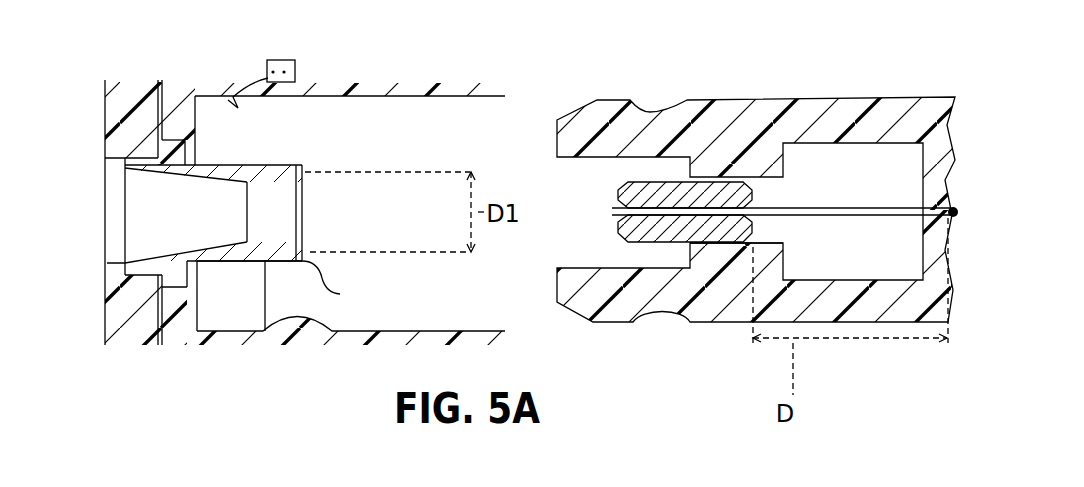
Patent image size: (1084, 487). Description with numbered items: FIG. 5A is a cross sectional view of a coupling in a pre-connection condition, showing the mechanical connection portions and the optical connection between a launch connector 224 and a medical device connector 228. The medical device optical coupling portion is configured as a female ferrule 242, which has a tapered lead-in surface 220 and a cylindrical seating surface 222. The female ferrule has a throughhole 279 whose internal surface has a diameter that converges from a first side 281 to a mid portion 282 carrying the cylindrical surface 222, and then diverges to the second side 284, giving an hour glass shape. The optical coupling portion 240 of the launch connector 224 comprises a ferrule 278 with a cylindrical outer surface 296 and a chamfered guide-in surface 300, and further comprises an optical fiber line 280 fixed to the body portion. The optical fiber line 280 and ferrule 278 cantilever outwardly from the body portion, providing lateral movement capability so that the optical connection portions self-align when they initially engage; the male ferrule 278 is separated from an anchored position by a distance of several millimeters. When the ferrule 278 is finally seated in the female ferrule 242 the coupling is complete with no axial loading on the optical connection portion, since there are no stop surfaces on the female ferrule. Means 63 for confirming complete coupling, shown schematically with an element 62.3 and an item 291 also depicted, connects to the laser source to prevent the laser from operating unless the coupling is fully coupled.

The sensor unit 62.3 is at (283, 60).
The means for confirming complete coupling 63 is at (297, 68).
The optical fiber line 280 is at (205, 192).
The cylindrical seating surface 222 is at (298, 203).
The throughhole 279 is at (278, 222).
The second side 284 is at (118, 258).
The first side 281 is at (340, 294).
The medical device connector 228 is at (215, 332).
The female ferrule 242 is at (265, 328).
The tapered lead-in surface 220 is at (280, 250).
The mid portion 282 is at (260, 243).
The chamfered guide-in surface 300 is at (620, 183).
The pin 291 is at (713, 173).
The cylindrical outer surface 296 is at (656, 238).
The ferrule 278 is at (687, 227).
The optical coupling portion 240 is at (723, 232).
The launch connector 224 is at (820, 313).